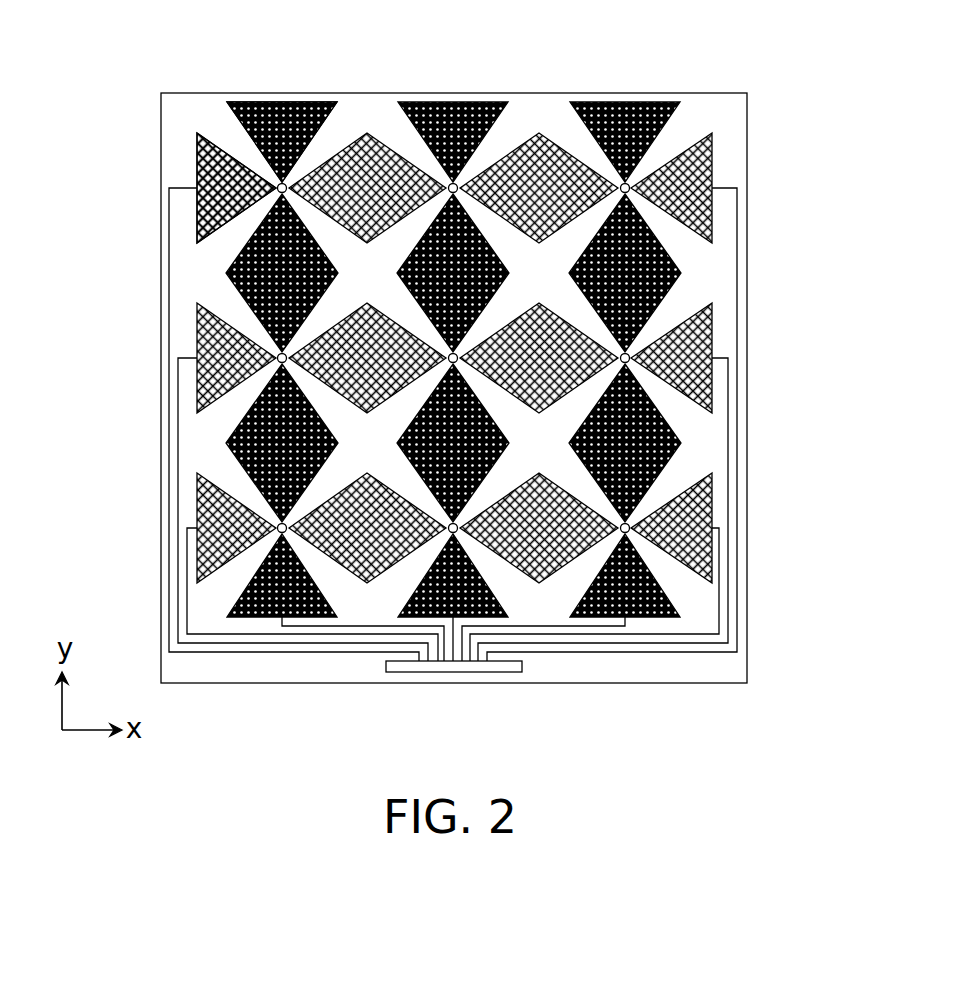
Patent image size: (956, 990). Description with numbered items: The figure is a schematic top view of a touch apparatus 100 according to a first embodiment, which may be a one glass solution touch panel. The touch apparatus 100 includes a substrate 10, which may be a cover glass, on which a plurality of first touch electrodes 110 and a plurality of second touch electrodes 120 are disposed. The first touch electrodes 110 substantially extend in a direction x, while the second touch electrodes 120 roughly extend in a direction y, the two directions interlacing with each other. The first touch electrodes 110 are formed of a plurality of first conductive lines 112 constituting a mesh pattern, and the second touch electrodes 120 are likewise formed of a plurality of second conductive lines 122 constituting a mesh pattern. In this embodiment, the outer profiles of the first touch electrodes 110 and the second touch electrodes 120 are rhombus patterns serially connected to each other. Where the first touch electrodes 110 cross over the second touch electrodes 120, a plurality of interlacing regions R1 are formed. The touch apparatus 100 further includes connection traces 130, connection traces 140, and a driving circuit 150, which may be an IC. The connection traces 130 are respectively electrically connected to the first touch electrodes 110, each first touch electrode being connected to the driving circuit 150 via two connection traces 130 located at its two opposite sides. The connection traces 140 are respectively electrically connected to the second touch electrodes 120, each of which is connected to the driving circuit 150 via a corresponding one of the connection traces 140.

The substrate 10 is at (161, 480).
The touch apparatus 100 is at (752, 747).
The first touch electrodes 110 is at (186, 173).
The first conductive lines 112 is at (196, 163).
The second touch electrodes 120 is at (282, 99).
The second conductive lines 122 is at (332, 101).
The connection traces 130 is at (178, 430).
The connection traces 140 is at (340, 627).
The driving circuit 150 is at (453, 667).
The interlacing region R1 is at (446, 339).